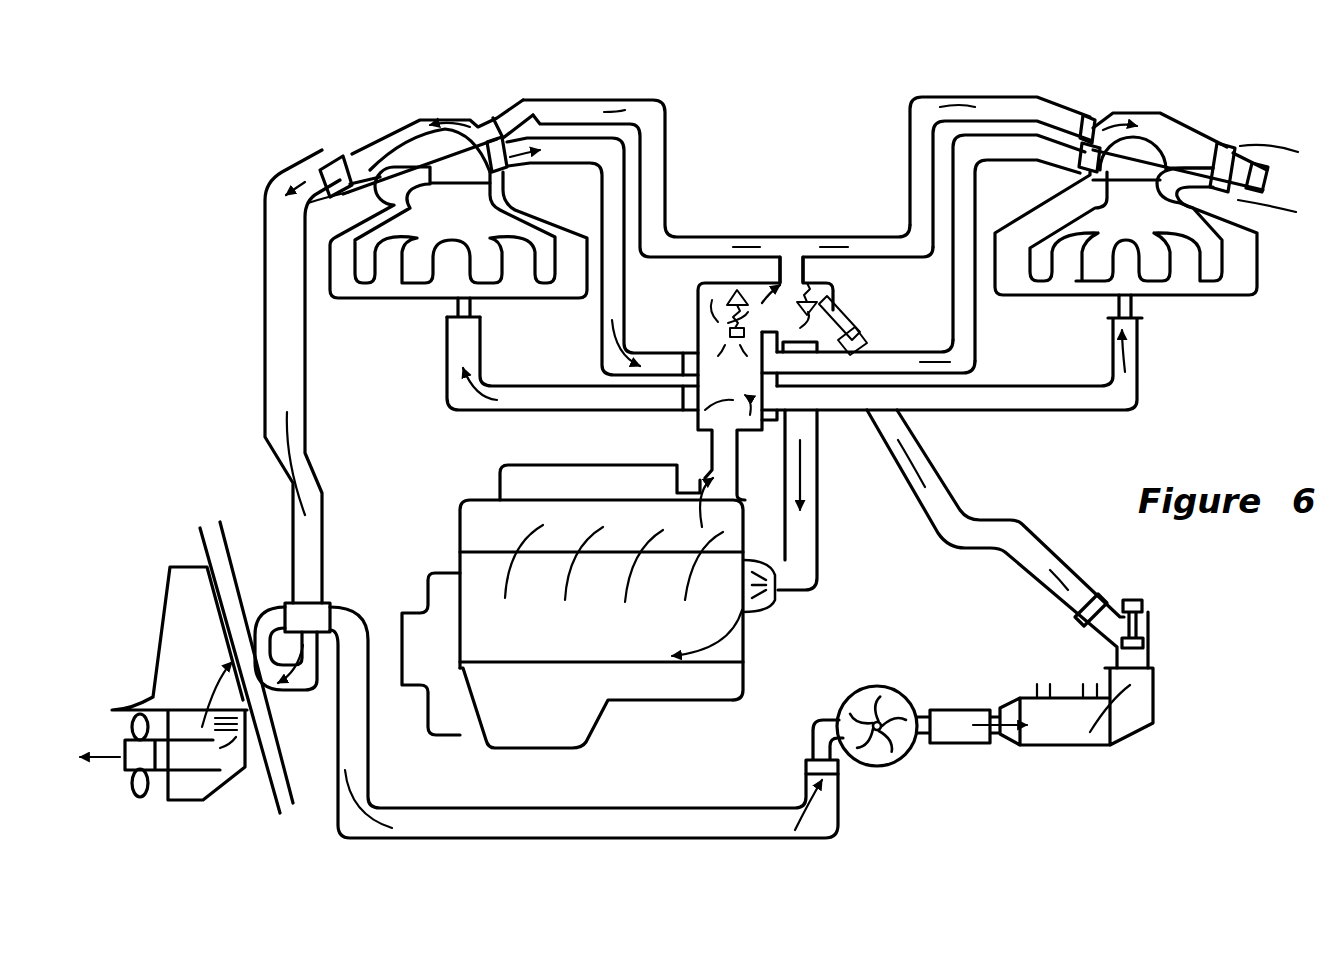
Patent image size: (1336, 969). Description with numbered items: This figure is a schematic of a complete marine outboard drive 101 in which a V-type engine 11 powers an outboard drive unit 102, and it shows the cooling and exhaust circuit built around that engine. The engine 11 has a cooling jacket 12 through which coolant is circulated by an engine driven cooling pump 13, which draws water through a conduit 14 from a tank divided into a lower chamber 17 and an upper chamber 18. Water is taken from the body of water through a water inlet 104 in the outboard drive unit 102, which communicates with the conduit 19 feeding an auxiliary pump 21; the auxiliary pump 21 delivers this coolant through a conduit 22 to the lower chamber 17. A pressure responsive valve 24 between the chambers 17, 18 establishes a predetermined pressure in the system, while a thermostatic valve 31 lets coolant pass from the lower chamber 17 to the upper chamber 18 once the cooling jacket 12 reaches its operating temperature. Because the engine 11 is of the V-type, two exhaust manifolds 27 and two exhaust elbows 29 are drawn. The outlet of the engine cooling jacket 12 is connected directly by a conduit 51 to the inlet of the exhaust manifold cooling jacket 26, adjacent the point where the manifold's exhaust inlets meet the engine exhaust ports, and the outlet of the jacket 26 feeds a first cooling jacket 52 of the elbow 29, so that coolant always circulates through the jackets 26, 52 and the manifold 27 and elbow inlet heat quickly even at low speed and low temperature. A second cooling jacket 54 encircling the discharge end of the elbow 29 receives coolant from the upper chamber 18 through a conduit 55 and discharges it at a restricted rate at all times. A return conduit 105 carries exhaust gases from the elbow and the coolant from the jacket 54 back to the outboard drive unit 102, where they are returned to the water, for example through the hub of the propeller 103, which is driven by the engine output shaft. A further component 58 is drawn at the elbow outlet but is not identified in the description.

The engine 11 is at (462, 498).
The cooling jacket 12 is at (737, 651).
The engine driven cooling pump 13 is at (752, 598).
The conduit 14 is at (808, 433).
The lower chamber 17 is at (700, 332).
The upper chamber 18 is at (788, 297).
The underwater pickup conduit 19 is at (563, 827).
The auxiliary pump 21 is at (880, 770).
The conduit 22 is at (948, 497).
The pressure responsive valve 24 is at (833, 312).
The exhaust manifold cooling jacket 26 is at (580, 232).
The exhaust manifold 27 is at (398, 302).
The exhaust elbow 29 is at (425, 108).
The thermostatic valve 31 is at (700, 283).
The conduit 51 is at (597, 405).
The first cooling jacket 52 is at (497, 140).
The second cooling jacket 54 is at (396, 132).
The conduit 55 is at (655, 185).
The discharge nozzle 58 is at (330, 172).
The marine outboard drive 101 is at (883, 86).
The outboard drive unit 102 is at (157, 617).
The propeller 103 is at (122, 750).
The water inlet 104 is at (228, 726).
The return conduit 105 is at (283, 378).